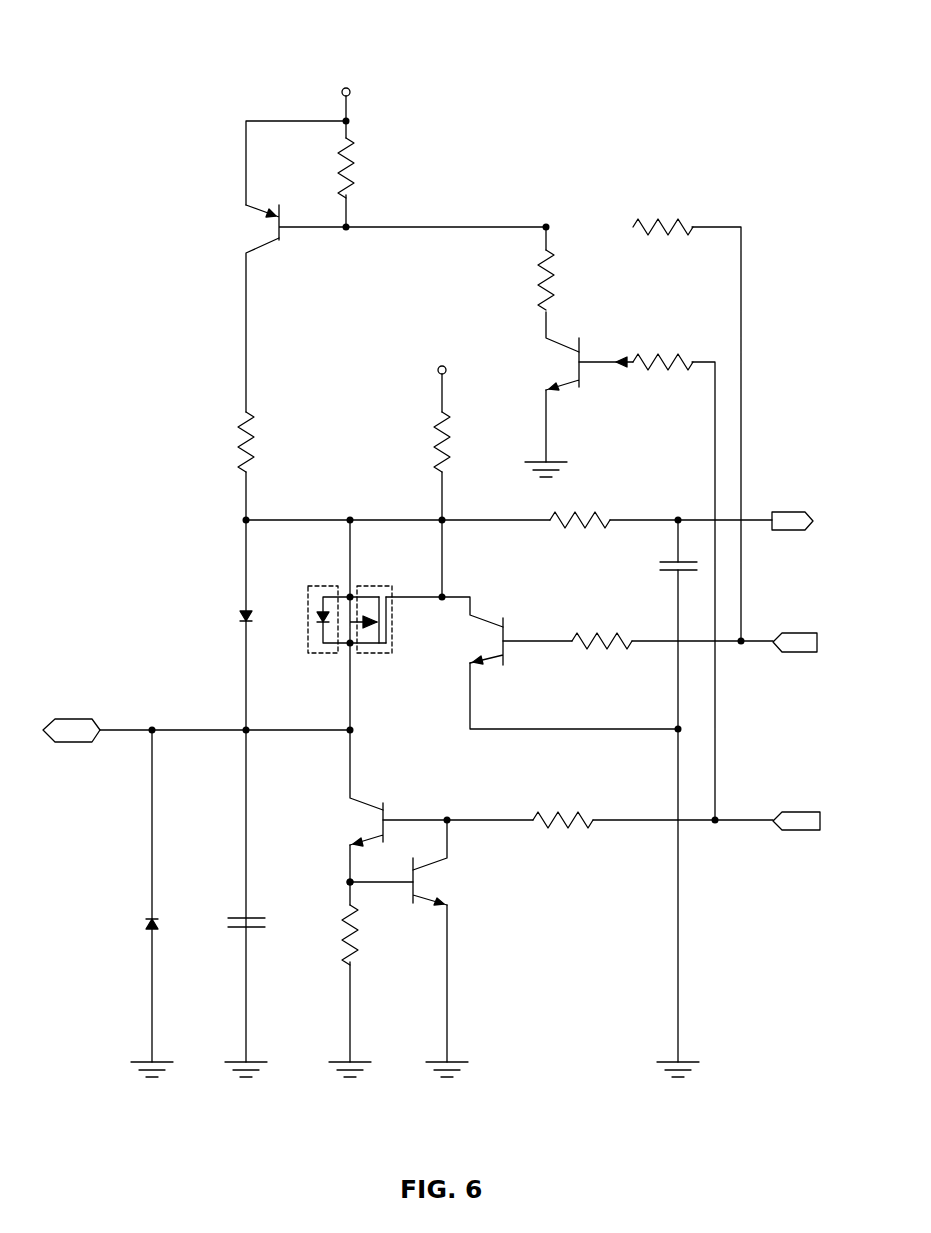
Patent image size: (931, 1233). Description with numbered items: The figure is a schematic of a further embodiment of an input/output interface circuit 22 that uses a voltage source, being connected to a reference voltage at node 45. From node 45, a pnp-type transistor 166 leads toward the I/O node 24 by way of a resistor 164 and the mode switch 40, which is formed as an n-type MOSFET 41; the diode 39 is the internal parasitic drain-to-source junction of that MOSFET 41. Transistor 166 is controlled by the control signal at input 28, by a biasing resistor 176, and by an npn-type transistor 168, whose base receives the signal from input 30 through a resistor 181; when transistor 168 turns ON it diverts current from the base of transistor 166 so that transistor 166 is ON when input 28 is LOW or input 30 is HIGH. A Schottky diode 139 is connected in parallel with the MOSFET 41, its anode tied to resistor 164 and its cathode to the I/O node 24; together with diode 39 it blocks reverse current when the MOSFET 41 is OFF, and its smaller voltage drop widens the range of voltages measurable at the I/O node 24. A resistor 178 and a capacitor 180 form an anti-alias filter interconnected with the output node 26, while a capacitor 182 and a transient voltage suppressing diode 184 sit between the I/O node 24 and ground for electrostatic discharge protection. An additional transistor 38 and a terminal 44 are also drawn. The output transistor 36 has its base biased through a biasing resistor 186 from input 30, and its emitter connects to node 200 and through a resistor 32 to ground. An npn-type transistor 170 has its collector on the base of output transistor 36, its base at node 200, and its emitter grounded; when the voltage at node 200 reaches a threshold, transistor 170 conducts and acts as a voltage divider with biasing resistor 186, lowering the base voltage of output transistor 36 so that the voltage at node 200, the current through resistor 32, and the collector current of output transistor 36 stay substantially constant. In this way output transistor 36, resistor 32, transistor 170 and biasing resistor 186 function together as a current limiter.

The I/O interface circuit 22 is at (125, 57).
The node 45 is at (352, 90).
The pnp-type transistor 166 is at (282, 248).
The biasing resistor 176 is at (648, 222).
The npn-type transistor 168 is at (592, 332).
The resistor 181 is at (672, 355).
The resistor 164 is at (240, 445).
The supply terminal 44 is at (447, 368).
The resistor 178 is at (588, 512).
The output node 26 is at (787, 511).
The diode 39 is at (318, 588).
The mode switch 40 is at (394, 652).
The n-type MOSFET 41 is at (333, 662).
The Schottky diode 139 is at (242, 614).
The capacitor 180 is at (667, 573).
The transistor 38 is at (508, 622).
The input 28 is at (787, 632).
The I/O node 24 is at (70, 743).
The output transistor 36 is at (385, 806).
The biasing resistor 186 is at (580, 812).
The input 30 is at (787, 811).
The npn-type transistor 170 is at (435, 862).
The node 200 is at (345, 882).
The transient voltage suppressing diode 184 is at (148, 920).
The capacitor 182 is at (240, 918).
The resistor 32 is at (358, 930).